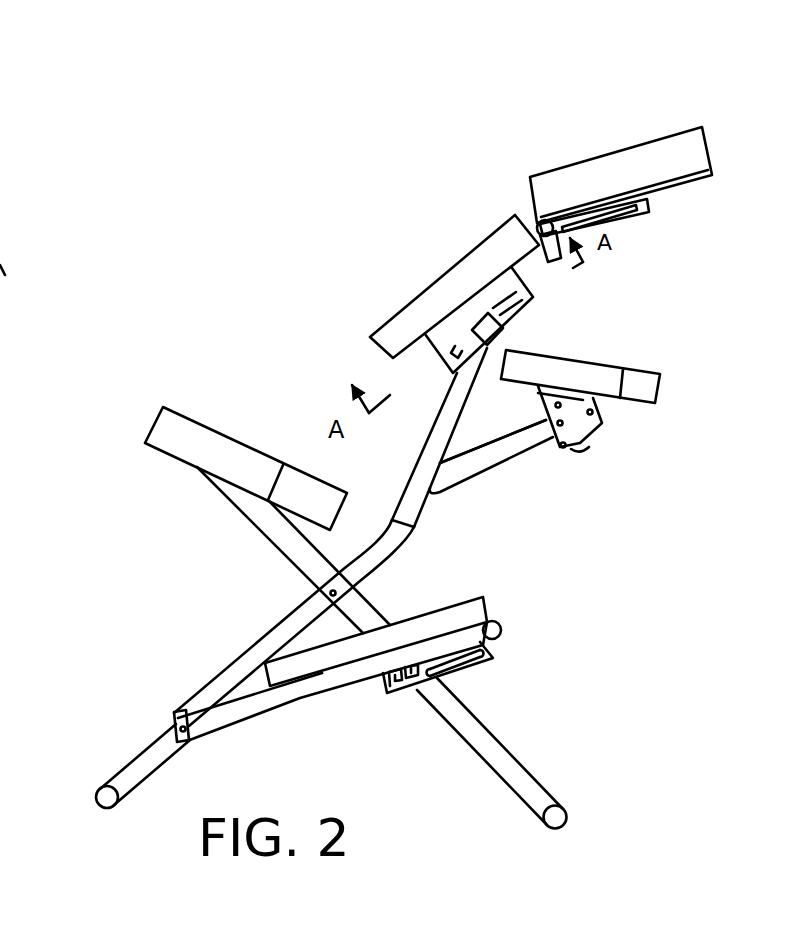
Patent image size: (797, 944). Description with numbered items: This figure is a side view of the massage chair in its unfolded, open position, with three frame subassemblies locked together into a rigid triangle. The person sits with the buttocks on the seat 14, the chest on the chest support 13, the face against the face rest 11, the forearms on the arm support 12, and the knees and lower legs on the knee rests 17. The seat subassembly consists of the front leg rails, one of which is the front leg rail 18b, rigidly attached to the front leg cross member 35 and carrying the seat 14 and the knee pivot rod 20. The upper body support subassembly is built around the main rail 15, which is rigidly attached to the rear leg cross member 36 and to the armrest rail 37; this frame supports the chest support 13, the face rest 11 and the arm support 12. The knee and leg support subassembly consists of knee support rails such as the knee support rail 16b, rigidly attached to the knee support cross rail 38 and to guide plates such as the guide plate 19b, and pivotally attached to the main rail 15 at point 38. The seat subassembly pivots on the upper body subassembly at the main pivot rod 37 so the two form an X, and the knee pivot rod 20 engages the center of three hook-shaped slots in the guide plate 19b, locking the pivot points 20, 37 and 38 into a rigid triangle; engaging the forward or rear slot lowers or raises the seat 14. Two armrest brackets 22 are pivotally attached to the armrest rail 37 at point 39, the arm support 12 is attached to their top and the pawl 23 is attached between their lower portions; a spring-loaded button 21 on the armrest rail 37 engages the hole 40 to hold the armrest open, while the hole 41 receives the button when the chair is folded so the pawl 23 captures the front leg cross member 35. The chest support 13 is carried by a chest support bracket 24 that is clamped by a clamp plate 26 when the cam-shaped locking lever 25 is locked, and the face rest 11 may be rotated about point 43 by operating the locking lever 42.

The face rest 11 is at (593, 153).
The pivot point 43 is at (537, 227).
The locking lever 42 is at (543, 255).
The chest support 13 is at (453, 260).
The chest support bracket 24 is at (524, 283).
The locking lever 25 is at (458, 342).
The clamp plate 26 is at (512, 330).
The arm support 12 is at (640, 407).
The armrest bracket 22 is at (580, 405).
The hole 41 is at (552, 405).
The pivot point 39 is at (600, 420).
The pawl 23 is at (578, 458).
The spring-loaded button 21 is at (524, 472).
The hole 40 is at (541, 431).
The armrest rail / main pivot rod 37 is at (470, 485).
The seat 14 is at (245, 440).
The main rail 15 is at (270, 623).
The knee rest 17 is at (490, 597).
The knee support rail 16b is at (227, 723).
The knee support cross rail / pivot point 38 is at (505, 626).
The guide plate 19b is at (493, 670).
The knee pivot rod 20 is at (410, 658).
The front leg rail 18b is at (517, 753).
The front leg cross member 35 is at (570, 817).
The rear leg cross member 36 is at (93, 797).